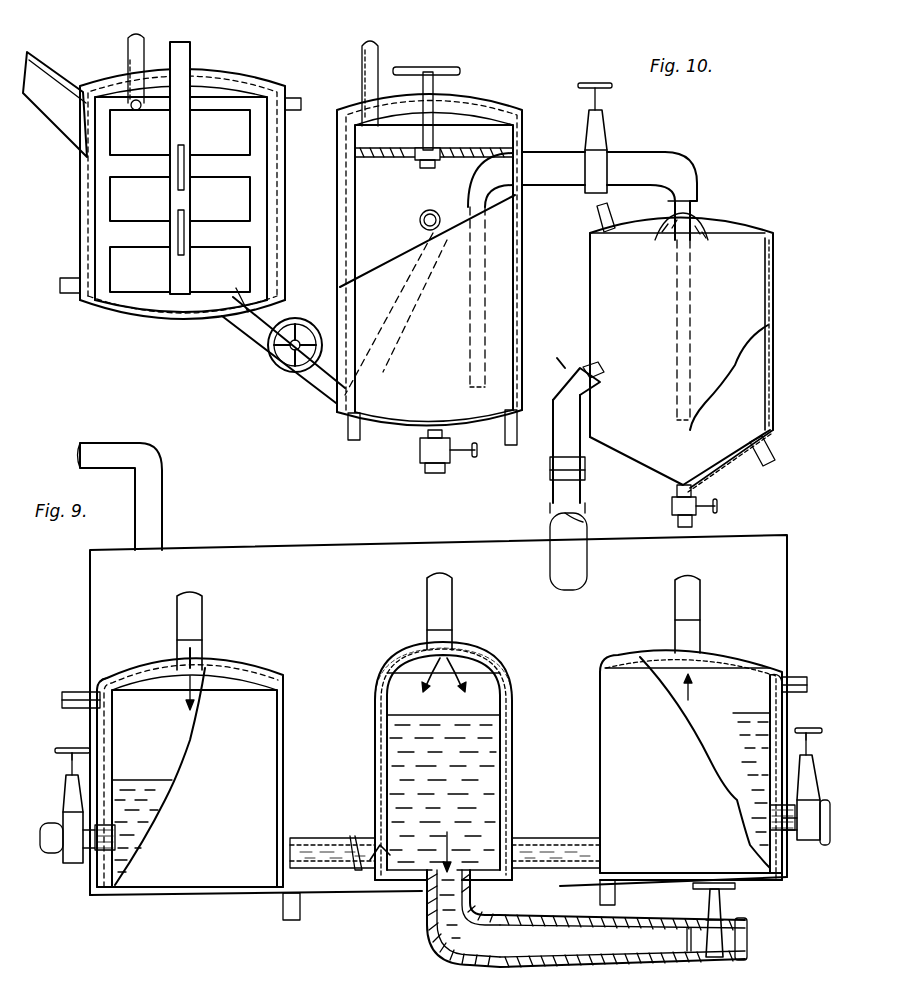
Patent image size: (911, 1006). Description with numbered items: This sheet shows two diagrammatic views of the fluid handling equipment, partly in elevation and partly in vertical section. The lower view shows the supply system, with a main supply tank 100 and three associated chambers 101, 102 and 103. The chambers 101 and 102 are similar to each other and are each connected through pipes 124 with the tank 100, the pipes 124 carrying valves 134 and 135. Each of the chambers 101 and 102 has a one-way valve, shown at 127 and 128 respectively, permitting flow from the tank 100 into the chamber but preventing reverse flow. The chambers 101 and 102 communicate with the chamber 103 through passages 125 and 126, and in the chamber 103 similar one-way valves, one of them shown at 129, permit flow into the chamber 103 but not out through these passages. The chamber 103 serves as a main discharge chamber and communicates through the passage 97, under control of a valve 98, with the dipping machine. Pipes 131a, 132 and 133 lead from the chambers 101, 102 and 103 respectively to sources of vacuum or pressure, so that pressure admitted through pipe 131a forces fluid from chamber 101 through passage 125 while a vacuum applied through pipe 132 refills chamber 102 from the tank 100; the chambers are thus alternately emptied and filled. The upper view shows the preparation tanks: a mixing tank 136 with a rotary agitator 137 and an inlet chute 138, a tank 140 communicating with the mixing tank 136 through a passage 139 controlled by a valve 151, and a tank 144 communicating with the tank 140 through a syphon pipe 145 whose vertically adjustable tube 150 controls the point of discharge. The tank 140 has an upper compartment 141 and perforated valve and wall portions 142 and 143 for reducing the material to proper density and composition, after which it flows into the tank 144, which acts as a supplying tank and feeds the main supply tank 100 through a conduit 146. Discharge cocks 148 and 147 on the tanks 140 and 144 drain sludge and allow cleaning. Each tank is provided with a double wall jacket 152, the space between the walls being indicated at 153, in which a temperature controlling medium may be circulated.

In FIG. 9, the pipe 97 is at (540, 946).
In FIG. 9, the valve 98 is at (713, 940).
In FIG. 9, the main supply tank 100 is at (200, 560).
In FIG. 9, the chamber 101 is at (237, 865).
In FIG. 9, the chamber 102 is at (750, 858).
In FIG. 9, the chamber 103 is at (393, 686).
In FIG. 9, the pipe 124 is at (48, 856).
In FIG. 9, the passage 125 is at (338, 840).
In FIG. 9, the passage 126 is at (580, 836).
In FIG. 9, the one-way valve 127 is at (118, 852).
In FIG. 9, the one-way valve 128 is at (784, 832).
In FIG. 9, the one-way valve 129 is at (374, 878).
In FIG. 9, the pipe 131a is at (203, 614).
In FIG. 9, the pipe 132 is at (701, 602).
In FIG. 9, the pipe 133 is at (453, 607).
In FIG. 9, the valve 134 is at (76, 845).
In FIG. 9, the valve 135 is at (64, 795).
In FIG. 10, the mixing tank 136 is at (96, 239).
In FIG. 10, the rotary agitator 137 is at (186, 76).
In FIG. 10, the inlet chute 138 is at (48, 112).
In FIG. 10, the passage 139 is at (272, 322).
In FIG. 10, the tank 140 is at (409, 269).
In FIG. 10, the upper compartment 141 is at (341, 118).
In FIG. 10, the perforated valve portion 142 is at (512, 142).
In FIG. 10, the perforated wall portion 143 is at (356, 153).
In FIG. 10, the tank 144 is at (608, 268).
In FIG. 10, the syphon pipe 145 is at (565, 182).
In FIG. 10, the conduit 146 is at (552, 452).
In FIG. 10, the discharge cock 147 is at (700, 497).
In FIG. 10, the discharge cock 148 is at (420, 452).
In FIG. 10, the tube 150 is at (693, 296).
In FIG. 10, the valve 151 is at (283, 364).
In FIG. 10, the double wall jacket 152 is at (266, 86).
In FIG. 9, the double wall jacket 152 is at (122, 672).
In FIG. 10, the space between double walls 153 is at (137, 80).
In FIG. 9, the space between double walls 153 is at (105, 676).